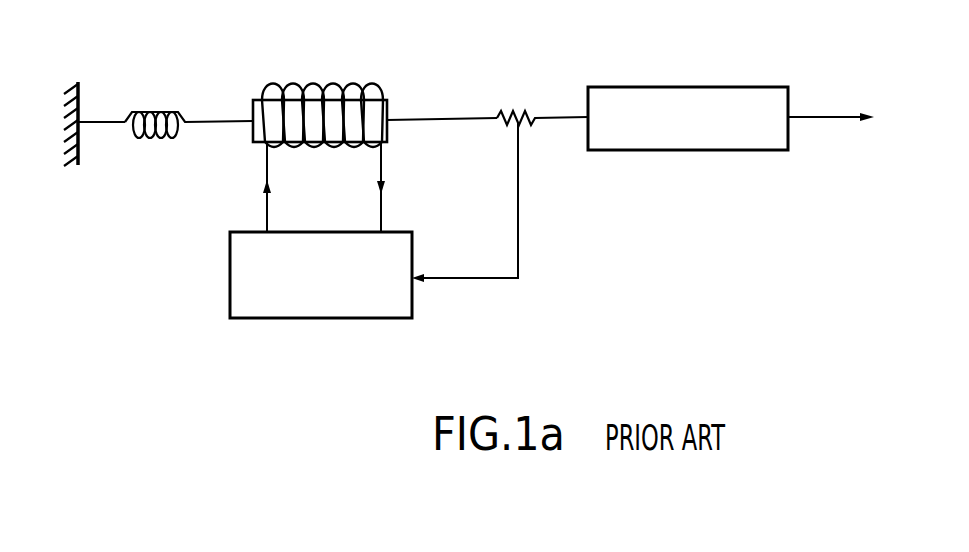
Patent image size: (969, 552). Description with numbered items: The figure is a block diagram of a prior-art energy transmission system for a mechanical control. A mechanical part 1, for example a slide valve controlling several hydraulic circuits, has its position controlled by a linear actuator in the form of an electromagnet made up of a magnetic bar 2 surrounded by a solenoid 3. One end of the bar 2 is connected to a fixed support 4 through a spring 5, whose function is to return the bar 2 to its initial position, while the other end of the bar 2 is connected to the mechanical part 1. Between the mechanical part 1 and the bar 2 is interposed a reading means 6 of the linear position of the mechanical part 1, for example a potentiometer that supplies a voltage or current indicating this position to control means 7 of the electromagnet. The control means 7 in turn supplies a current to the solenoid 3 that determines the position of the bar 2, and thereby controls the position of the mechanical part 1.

The mechanical part 1 is at (718, 88).
The magnetic bar 2 is at (388, 128).
The solenoid 3 is at (330, 92).
The fixed support 4 is at (79, 99).
The spring 5 is at (150, 110).
The reading means 6 is at (518, 108).
The control means 7 is at (230, 290).